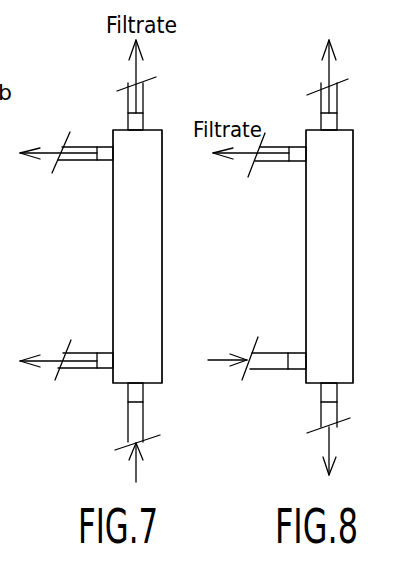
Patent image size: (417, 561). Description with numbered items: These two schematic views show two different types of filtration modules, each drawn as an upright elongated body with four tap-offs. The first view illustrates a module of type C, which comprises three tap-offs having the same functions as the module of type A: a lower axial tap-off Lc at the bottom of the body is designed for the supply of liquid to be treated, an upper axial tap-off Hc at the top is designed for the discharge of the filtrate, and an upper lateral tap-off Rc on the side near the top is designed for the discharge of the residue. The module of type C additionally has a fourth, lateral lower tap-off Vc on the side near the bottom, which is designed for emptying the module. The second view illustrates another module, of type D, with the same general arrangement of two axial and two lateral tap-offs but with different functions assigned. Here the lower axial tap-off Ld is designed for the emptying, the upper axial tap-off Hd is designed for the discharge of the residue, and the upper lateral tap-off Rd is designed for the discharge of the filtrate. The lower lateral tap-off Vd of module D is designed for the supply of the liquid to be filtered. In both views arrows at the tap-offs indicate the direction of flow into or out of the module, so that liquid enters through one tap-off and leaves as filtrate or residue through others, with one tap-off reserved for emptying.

In FIG. 7, the module of type C is at (127, 272).
In FIG. 7, the upper axial tap-off Hc is at (139, 122).
In FIG. 7, the upper lateral tap-off Rc is at (103, 157).
In FIG. 7, the lateral lower tap-off Vc is at (103, 362).
In FIG. 7, the lower axial tap-off Lc is at (140, 393).
In FIG. 8, the module of type D is at (318, 267).
In FIG. 8, the upper axial tap-off Hd is at (333, 122).
In FIG. 8, the upper lateral tap-off Rd is at (297, 165).
In FIG. 8, the lower lateral tap-off Vd is at (296, 370).
In FIG. 8, the lower axial tap-off Ld is at (336, 394).